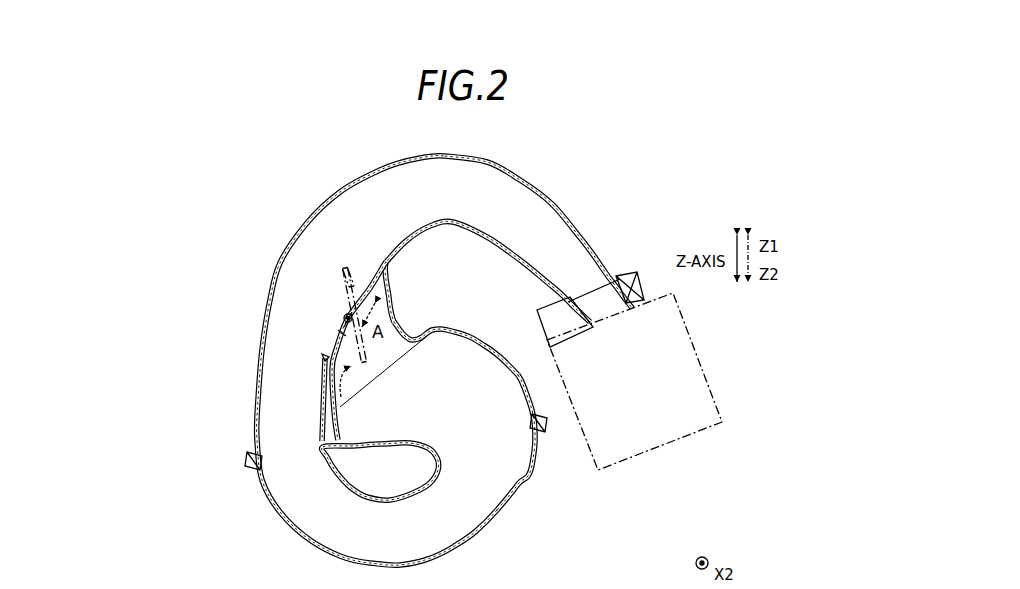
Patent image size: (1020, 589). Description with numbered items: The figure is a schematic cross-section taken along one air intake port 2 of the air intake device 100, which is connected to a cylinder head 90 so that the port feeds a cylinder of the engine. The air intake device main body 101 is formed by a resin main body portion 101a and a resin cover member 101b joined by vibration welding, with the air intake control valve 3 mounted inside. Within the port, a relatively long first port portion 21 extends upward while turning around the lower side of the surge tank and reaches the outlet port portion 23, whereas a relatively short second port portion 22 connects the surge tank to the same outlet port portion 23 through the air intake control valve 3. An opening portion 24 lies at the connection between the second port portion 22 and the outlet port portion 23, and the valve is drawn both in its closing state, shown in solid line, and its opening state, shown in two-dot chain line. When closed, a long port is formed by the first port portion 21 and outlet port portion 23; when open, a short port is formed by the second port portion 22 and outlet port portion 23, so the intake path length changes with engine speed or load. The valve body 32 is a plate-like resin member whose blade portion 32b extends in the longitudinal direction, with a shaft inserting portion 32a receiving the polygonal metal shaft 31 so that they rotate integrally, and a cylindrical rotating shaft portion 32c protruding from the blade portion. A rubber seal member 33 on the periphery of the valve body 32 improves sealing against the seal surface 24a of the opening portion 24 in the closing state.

The air intake port 2 is at (535, 172).
The air intake control valve 3 is at (327, 342).
The first port portion 21 is at (333, 522).
The second port portion 22 is at (389, 340).
The outlet port portion 23 is at (537, 222).
The opening portion 24 is at (321, 402).
The seal surface 24a is at (324, 358).
The shaft 31 is at (345, 313).
The valve body 32 is at (347, 268).
The shaft inserting portion 32a is at (340, 327).
The blade portion 32b is at (348, 278).
The rotating shaft portion 32c is at (345, 320).
The seal member 33 is at (380, 279).
The cylinder head 90 is at (655, 447).
The air intake device 100 is at (657, 232).
The air intake device main body 101 is at (569, 228).
The main body portion 101a is at (432, 564).
The cover member 101b is at (379, 173).